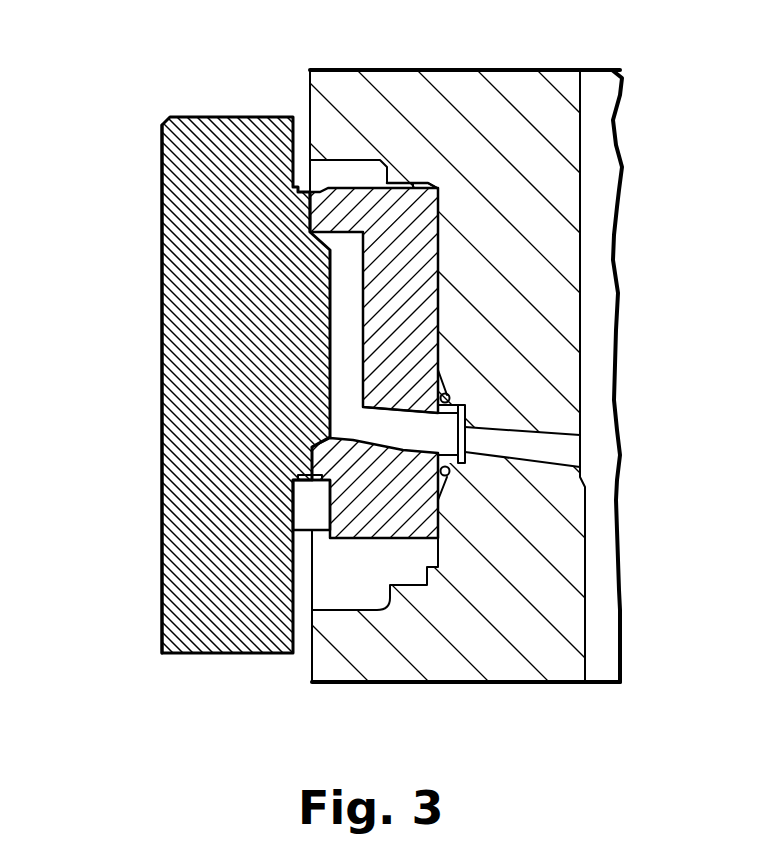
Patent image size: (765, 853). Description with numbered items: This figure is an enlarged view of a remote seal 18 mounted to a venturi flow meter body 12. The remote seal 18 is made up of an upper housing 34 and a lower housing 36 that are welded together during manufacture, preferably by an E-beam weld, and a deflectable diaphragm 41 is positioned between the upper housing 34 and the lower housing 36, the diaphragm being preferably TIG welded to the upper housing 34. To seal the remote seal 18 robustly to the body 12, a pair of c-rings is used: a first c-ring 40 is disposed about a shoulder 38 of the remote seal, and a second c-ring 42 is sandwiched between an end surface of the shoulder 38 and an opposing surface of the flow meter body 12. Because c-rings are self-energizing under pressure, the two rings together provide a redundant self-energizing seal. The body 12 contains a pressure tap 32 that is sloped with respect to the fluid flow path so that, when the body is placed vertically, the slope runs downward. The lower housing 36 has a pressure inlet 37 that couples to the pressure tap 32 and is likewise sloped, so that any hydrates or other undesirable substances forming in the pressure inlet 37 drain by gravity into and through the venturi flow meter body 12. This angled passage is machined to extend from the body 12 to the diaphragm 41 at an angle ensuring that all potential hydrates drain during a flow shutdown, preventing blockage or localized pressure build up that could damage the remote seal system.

The venturi flow meter body 12 is at (543, 682).
The remote seal 18 is at (175, 607).
The pressure tap 32 is at (580, 460).
The upper housing 34 is at (160, 380).
The lower housing 36 is at (410, 183).
The pressure inlet 37 is at (468, 418).
The shoulder 38 is at (450, 478).
The first c-ring 40 is at (447, 478).
The diaphragm 41 is at (330, 293).
The second c-ring 42 is at (442, 438).